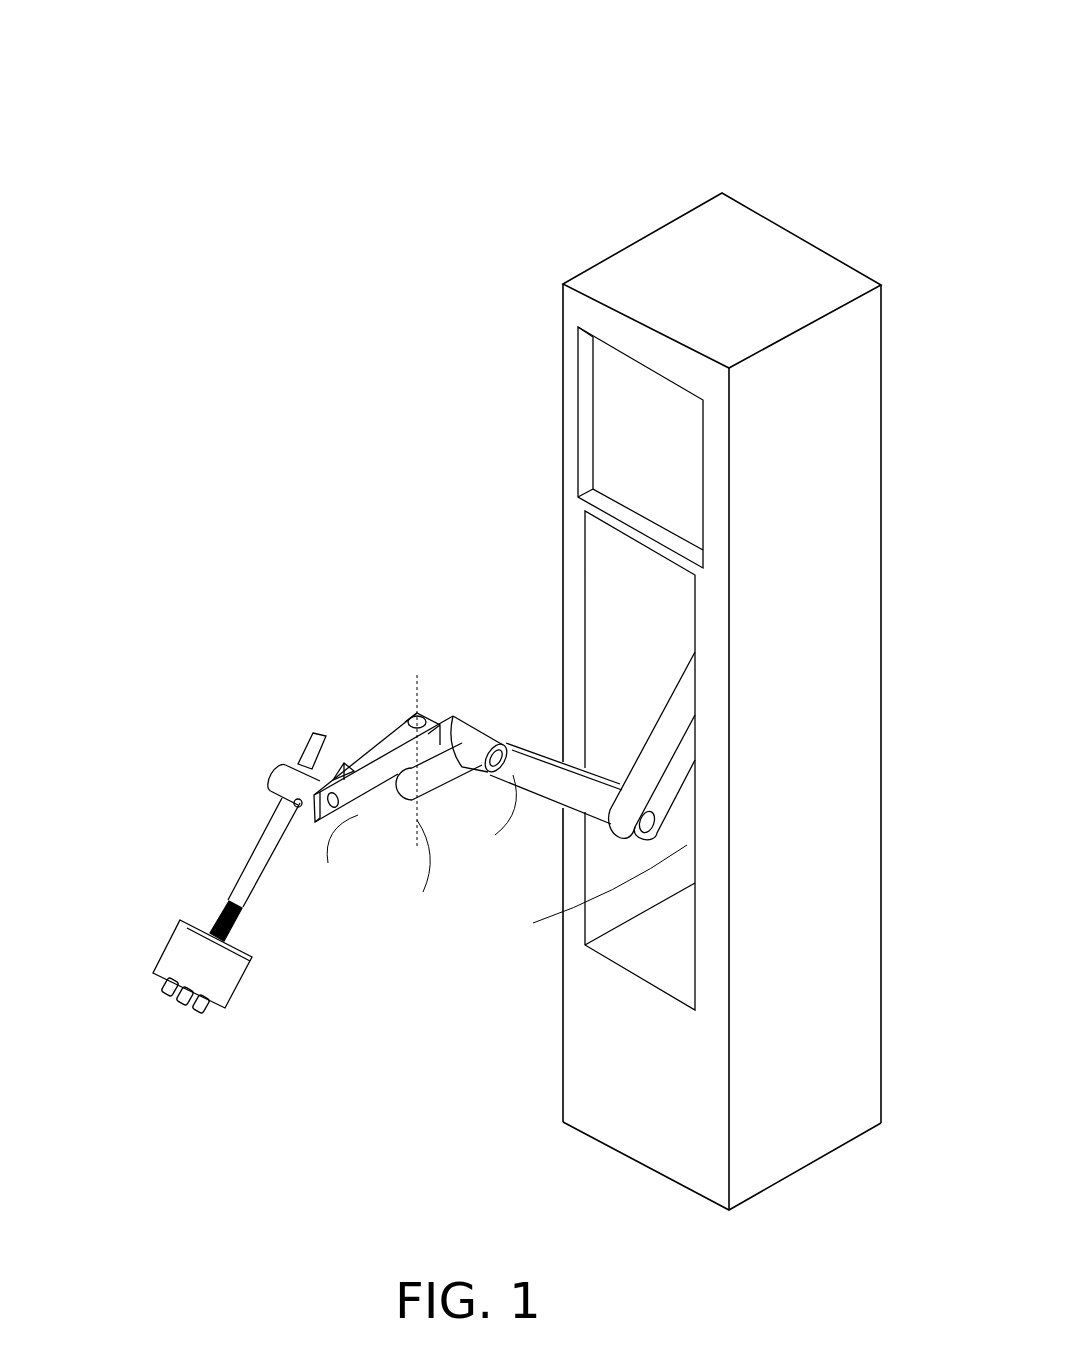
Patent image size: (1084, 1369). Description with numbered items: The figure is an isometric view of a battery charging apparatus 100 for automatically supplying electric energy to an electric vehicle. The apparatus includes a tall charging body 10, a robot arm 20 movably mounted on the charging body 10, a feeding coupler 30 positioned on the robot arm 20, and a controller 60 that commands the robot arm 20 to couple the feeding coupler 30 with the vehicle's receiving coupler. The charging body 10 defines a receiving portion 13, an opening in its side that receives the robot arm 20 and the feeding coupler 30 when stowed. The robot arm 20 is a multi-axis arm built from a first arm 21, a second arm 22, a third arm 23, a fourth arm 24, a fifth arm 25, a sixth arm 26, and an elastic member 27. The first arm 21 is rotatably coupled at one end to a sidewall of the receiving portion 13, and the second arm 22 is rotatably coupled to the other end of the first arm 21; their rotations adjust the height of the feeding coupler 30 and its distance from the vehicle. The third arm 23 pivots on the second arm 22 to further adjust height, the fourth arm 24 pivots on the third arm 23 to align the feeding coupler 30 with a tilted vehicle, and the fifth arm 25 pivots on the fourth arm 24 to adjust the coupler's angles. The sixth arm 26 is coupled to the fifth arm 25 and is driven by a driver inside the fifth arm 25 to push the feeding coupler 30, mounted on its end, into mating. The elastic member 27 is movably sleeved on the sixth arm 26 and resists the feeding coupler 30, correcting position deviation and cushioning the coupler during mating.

The battery charging apparatus 100 is at (277, 40).
The charging body 10 is at (650, 258).
The receiving portion 13 is at (577, 598).
The controller 60 is at (607, 420).
The robot arm 20 is at (190, 543).
The first arm 21 is at (537, 778).
The second arm 22 is at (675, 713).
The third arm 23 is at (437, 757).
The fourth arm 24 is at (377, 750).
The fifth arm 25 is at (302, 782).
The sixth arm 26 is at (267, 837).
The elastic member 27 is at (222, 902).
The feeding coupler 30 is at (227, 977).